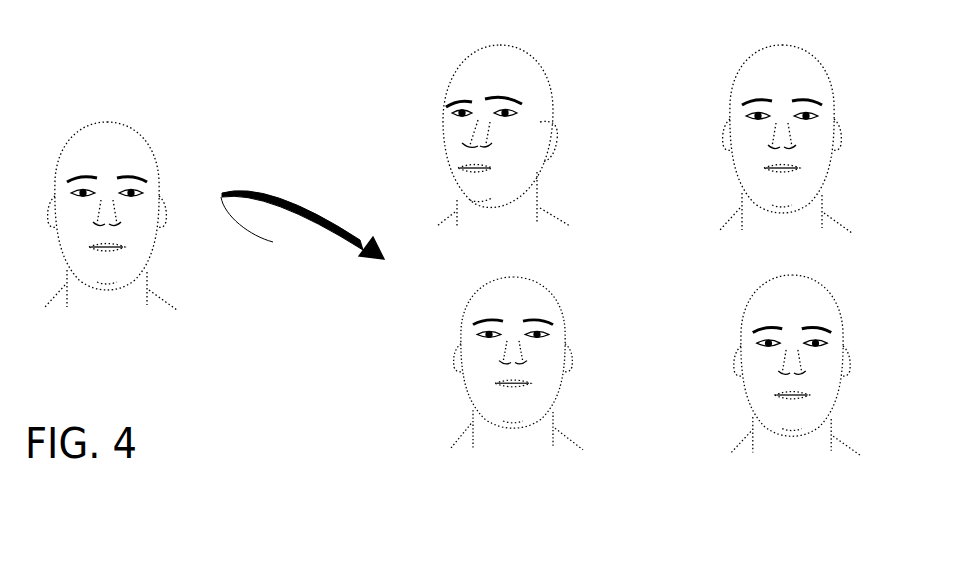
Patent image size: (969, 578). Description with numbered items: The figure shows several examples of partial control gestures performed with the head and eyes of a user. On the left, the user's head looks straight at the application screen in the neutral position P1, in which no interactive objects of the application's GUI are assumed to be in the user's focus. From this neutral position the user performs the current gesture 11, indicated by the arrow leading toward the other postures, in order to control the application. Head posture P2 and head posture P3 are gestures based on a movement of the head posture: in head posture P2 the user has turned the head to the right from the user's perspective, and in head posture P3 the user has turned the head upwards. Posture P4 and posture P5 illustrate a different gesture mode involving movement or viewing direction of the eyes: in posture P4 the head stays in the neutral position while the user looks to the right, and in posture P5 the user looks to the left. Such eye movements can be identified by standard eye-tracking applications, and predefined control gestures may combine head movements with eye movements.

The neutral position P1 is at (117, 122).
The current gesture 11 is at (258, 190).
The head posture P2 is at (543, 62).
The head posture P3 is at (553, 298).
The posture P4 is at (828, 80).
The posture P5 is at (833, 298).